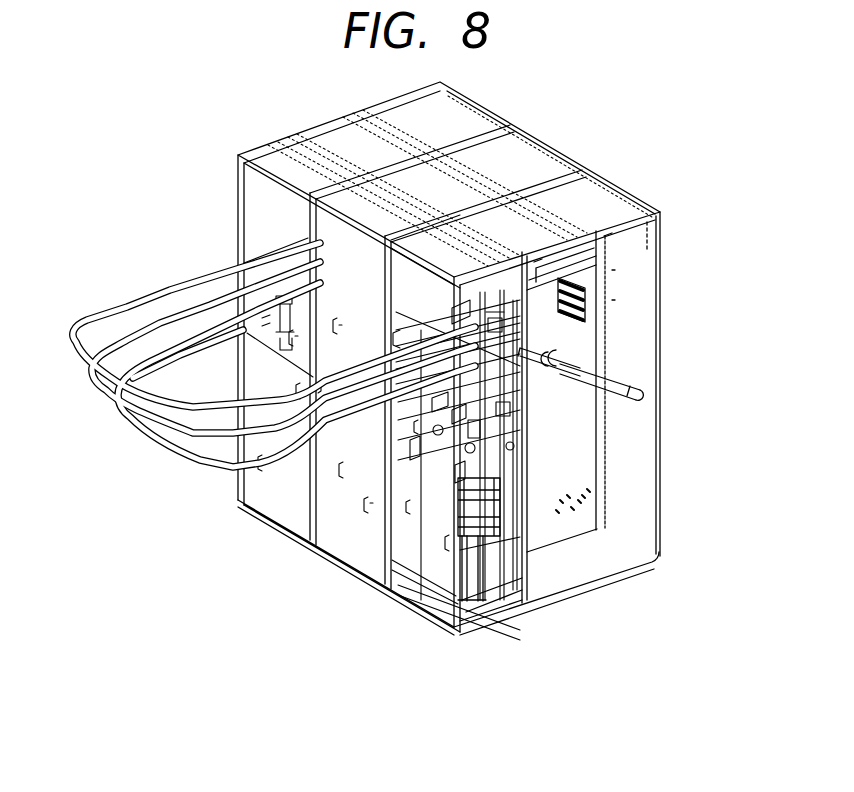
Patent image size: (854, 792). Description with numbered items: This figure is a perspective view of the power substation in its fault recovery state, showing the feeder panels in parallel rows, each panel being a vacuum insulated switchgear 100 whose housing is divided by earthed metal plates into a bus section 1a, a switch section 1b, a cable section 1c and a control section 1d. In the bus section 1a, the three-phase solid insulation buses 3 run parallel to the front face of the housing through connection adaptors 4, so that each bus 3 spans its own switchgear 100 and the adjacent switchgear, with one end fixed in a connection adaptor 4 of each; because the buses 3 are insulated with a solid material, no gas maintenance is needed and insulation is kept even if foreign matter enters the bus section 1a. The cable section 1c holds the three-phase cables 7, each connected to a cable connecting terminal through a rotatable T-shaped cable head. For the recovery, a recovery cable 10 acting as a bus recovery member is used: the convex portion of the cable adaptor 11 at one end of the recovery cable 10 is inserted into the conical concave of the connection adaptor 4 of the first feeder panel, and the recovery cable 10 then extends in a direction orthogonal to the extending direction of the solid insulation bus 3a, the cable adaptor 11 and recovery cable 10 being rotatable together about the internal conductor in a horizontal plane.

The vacuum insulated switchgear 100 is at (268, 532).
The recovery cable 10 is at (117, 307).
The bus section 1a is at (580, 282).
The cable adaptor 11 is at (580, 330).
The control section 1d is at (643, 318).
The connection adaptor 4 is at (603, 347).
The solid insulation bus 3 is at (612, 388).
The solid insulation bus (BUS #1) 3a is at (618, 379).
The switch section 1b is at (570, 473).
The cable section 1c is at (503, 568).
The cable 7 is at (481, 568).